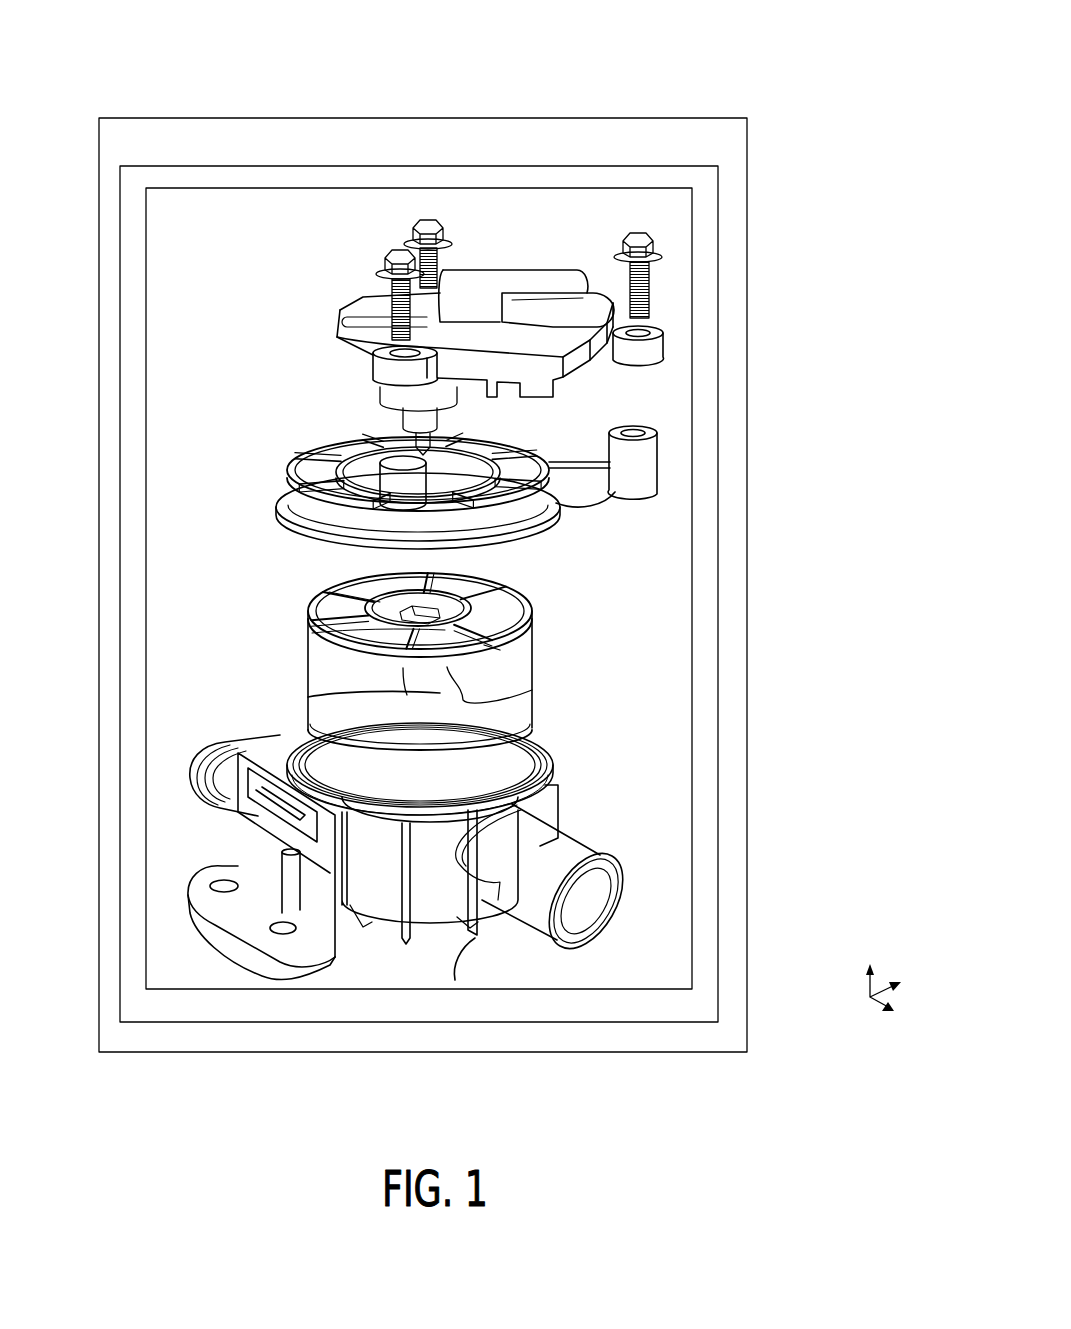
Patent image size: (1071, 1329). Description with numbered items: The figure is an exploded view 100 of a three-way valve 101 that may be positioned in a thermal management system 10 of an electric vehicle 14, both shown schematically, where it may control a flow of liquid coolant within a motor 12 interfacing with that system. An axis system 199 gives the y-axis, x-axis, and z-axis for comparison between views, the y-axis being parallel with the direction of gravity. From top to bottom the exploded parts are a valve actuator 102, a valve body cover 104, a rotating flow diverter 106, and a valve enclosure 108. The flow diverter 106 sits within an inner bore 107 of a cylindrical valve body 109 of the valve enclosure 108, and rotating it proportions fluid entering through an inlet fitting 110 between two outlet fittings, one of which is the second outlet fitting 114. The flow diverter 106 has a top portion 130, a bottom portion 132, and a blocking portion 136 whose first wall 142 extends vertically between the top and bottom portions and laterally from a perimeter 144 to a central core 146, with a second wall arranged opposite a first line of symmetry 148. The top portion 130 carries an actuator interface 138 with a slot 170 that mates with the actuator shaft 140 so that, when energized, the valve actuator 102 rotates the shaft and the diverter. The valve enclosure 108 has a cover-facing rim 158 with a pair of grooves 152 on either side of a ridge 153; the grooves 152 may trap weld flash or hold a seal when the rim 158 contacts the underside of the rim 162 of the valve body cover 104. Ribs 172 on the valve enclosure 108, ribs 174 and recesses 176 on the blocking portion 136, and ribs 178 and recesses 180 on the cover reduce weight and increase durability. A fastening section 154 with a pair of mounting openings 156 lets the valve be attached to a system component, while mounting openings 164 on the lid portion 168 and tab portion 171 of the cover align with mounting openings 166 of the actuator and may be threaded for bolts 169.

The thermal management system 10 is at (265, 190).
The motor 12 is at (263, 165).
The electric vehicle 14 is at (307, 117).
The exploded view 100 is at (742, 92).
The three-way valve 101 is at (434, 249).
The valve actuator 102 is at (608, 318).
The valve body cover 104 is at (434, 441).
The flow diverter 106 is at (434, 629).
The inner bore 107 is at (434, 866).
The valve enclosure 108 is at (490, 777).
The cylindrical valve body 109 is at (543, 718).
The inlet fitting 110 is at (603, 853).
The second outlet fitting 114 is at (220, 763).
The top portion 130 is at (415, 593).
The bottom portion 132 is at (532, 742).
The blocking portion 136 is at (289, 626).
The actuator interface 138 is at (472, 590).
The actuator shaft 140 is at (438, 428).
The first wall 142 is at (313, 663).
The perimeter 144 is at (308, 727).
The central core 146 is at (440, 693).
The first line of symmetry 148 is at (497, 650).
The grooves 152 is at (553, 768).
The ridge 153 is at (553, 776).
The fastening section 154 is at (190, 858).
The mounting openings 156 is at (220, 876).
The rim 158 is at (285, 750).
The rim 162 is at (287, 513).
The mounting openings 164 is at (297, 422).
The mounting openings 166 is at (348, 330).
The lid portion 168 is at (292, 476).
The bolts 169 is at (425, 220).
The slot 170 is at (407, 609).
The tab portion 171 is at (606, 458).
The ribs 172 is at (455, 980).
The ribs 174 is at (312, 609).
The recesses 176 is at (328, 619).
The ribs 178 is at (393, 450).
The recesses 180 is at (358, 442).
The axis system 199 is at (820, 942).